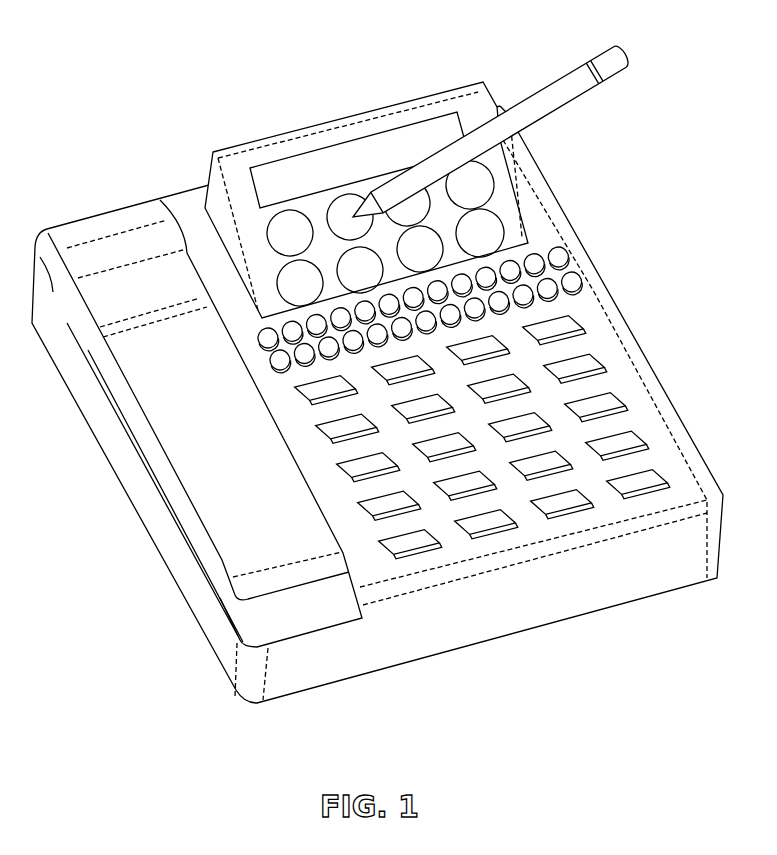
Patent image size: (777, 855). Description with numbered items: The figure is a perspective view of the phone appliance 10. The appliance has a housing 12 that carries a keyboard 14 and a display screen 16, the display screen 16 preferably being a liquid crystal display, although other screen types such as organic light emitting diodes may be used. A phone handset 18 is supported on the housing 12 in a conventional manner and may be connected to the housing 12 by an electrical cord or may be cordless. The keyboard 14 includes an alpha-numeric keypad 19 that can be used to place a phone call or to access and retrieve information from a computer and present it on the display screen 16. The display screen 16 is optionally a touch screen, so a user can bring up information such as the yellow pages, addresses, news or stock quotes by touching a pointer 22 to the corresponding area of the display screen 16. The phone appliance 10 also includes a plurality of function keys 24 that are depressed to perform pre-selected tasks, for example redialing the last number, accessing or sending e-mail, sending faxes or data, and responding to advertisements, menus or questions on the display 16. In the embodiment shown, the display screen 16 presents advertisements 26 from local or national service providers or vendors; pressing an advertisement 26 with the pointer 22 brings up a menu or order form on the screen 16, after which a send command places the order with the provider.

The phone appliance 10 is at (370, 361).
The housing 12 is at (480, 643).
The keyboard 14 is at (613, 423).
The display screen 16 is at (497, 190).
The phone handset 18 is at (180, 497).
The alpha-numeric keypad 19 is at (547, 240).
The pointer 22 is at (608, 42).
The function keys 24 is at (600, 358).
The advertisements 26 is at (430, 117).